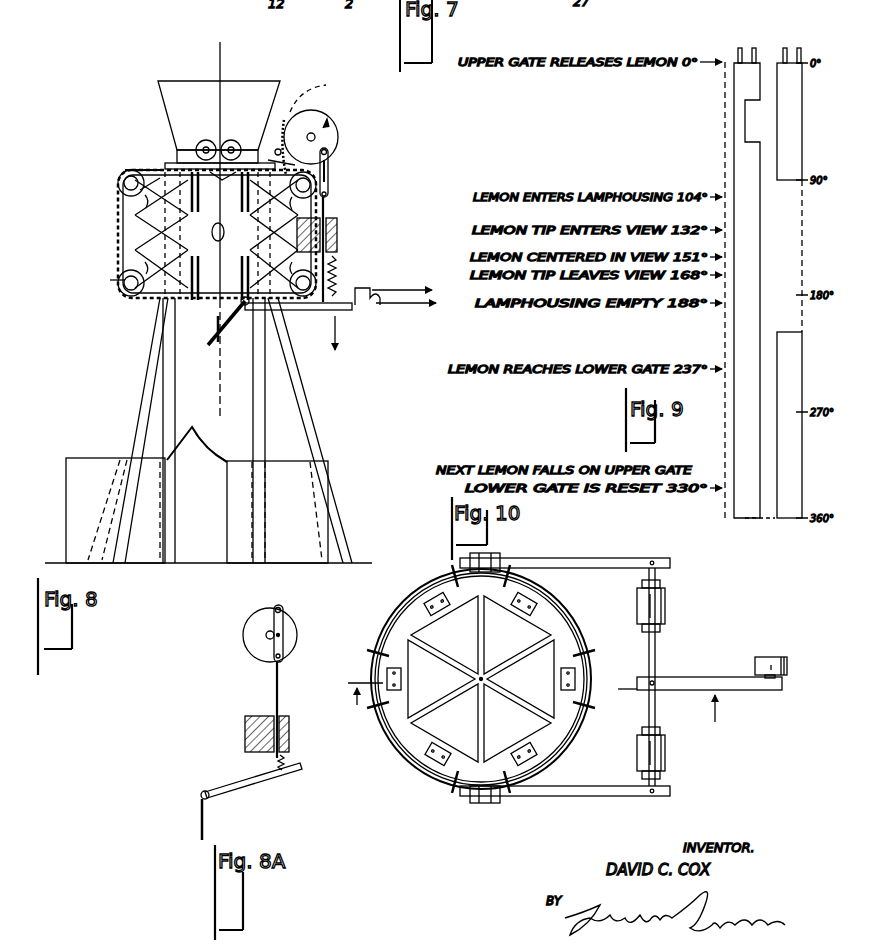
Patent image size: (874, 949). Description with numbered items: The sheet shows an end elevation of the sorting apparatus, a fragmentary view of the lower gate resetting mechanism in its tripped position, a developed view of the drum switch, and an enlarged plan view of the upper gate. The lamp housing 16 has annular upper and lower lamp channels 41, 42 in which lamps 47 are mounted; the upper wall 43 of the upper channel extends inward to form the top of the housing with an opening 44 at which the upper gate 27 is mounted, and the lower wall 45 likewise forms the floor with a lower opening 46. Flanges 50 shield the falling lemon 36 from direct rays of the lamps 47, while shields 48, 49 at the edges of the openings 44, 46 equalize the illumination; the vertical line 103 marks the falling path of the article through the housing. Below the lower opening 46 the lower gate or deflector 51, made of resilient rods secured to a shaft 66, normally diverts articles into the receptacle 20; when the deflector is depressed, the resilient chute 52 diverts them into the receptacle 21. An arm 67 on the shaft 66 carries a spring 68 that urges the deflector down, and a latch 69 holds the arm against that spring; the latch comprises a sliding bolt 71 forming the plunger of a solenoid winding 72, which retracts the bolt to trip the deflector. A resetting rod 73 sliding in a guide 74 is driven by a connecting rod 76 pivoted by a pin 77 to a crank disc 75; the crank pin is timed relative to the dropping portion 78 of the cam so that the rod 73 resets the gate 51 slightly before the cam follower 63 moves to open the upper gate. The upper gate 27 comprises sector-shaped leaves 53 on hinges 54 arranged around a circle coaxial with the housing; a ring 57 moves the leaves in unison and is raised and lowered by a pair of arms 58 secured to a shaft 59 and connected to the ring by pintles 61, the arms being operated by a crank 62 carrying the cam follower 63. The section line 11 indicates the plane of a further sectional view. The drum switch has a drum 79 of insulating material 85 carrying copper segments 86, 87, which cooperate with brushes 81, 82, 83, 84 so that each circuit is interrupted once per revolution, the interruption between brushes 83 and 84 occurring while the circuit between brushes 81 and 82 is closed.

In FIG. 8, the vertical centerline of lemon path 103 is at (221, 72).
In FIG. 8, the opening 44 is at (166, 166).
In FIG. 8, the upper wall 43 is at (145, 170).
In FIG. 8, the lower wall 45 is at (276, 150).
In FIG. 8, the cam follower 63 is at (285, 122).
In FIG. 10, the cam follower 63 is at (766, 657).
In FIG. 8, the dropping portion 78 is at (312, 88).
In FIG. 8, the crank disc 75 is at (338, 128).
In FIG. 8A, the crank disc 75 is at (296, 617).
In FIG. 8, the pin 77 is at (330, 160).
In FIG. 8A, the pin 77 is at (284, 614).
In FIG. 8, the connecting rod 76 is at (332, 170).
In FIG. 8A, the connecting rod 76 is at (284, 640).
In FIG. 8, the resetting rod 73 is at (327, 206).
In FIG. 8A, the resetting rod 73 is at (281, 675).
In FIG. 8, the guide 74 is at (340, 234).
In FIG. 8A, the guide 74 is at (291, 728).
In FIG. 8, the spring 68 is at (337, 266).
In FIG. 8A, the spring 68 is at (286, 762).
In FIG. 8, the solenoid winding 72 is at (380, 290).
In FIG. 8, the sliding bolt 71 is at (365, 310).
In FIG. 8, the latch 69 is at (342, 332).
In FIG. 8, the arm 67 is at (300, 311).
In FIG. 8A, the arm 67 is at (260, 786).
In FIG. 8, the shaft 66 is at (245, 306).
In FIG. 8A, the shaft 66 is at (208, 790).
In FIG. 8, the opening 46 is at (216, 335).
In FIG. 8, the lower gate 51 is at (220, 338).
In FIG. 8A, the lower gate 51 is at (205, 820).
In FIG. 8, the lamp housing 16 is at (122, 242).
In FIG. 8, the lamps 47 is at (118, 183).
In FIG. 8, the flanges 50 is at (146, 205).
In FIG. 8, the upper lamp channel 41 is at (140, 192).
In FIG. 8, the lower lamp channel 42 is at (120, 276).
In FIG. 8, the shield 48 is at (199, 192).
In FIG. 8, the upper gate 27 is at (228, 176).
In FIG. 8, the shield 49 is at (199, 275).
In FIG. 8, the lemon 36 is at (221, 240).
In FIG. 8, the receptacle 20 is at (76, 456).
In FIG. 8, the receptacle 21 is at (330, 472).
In FIG. 8, the diversion chute 52 is at (205, 450).
In FIG. 9, the copper segment 86 is at (735, 440).
In FIG. 9, the brush 81 is at (738, 52).
In FIG. 9, the brush 82 is at (757, 52).
In FIG. 9, the copper segment 87 is at (802, 120).
In FIG. 9, the brush 83 is at (784, 52).
In FIG. 9, the brush 84 is at (800, 52).
In FIG. 9, the insulating material 85 is at (786, 224).
In FIG. 9, the drum 79 is at (760, 522).
In FIG. 10, the ring 57 is at (420, 775).
In FIG. 10, the hinges 54 is at (432, 592).
In FIG. 10, the leaves 53 is at (540, 628).
In FIG. 10, the arms 58 is at (605, 558).
In FIG. 10, the pintles 61 is at (500, 557).
In FIG. 10, the shaft 59 is at (648, 710).
In FIG. 10, the crank 62 is at (690, 677).
In FIG. 10, the section line 11 is at (536, 706).